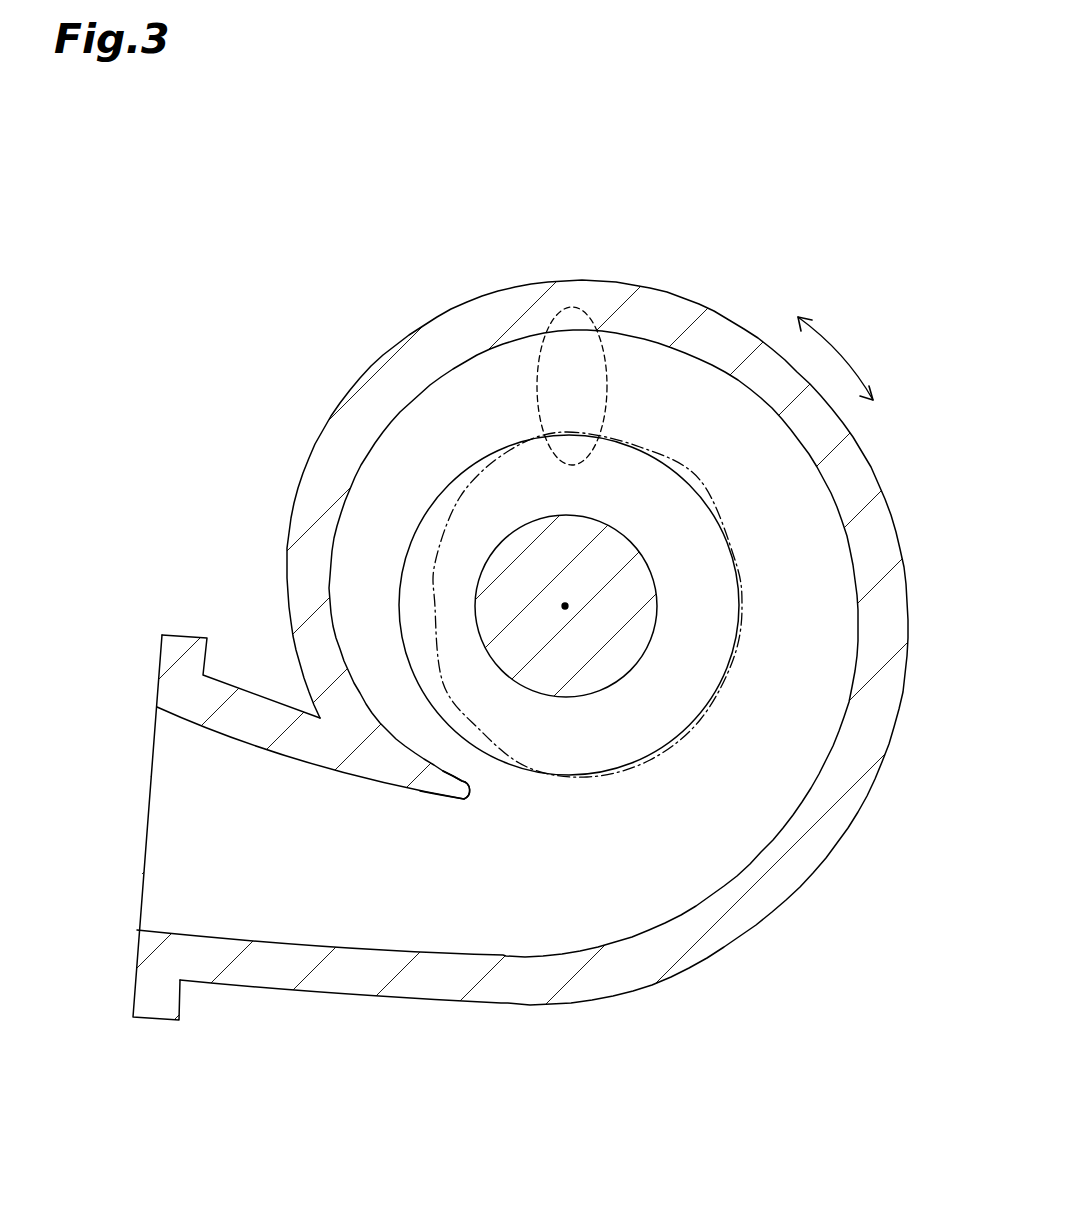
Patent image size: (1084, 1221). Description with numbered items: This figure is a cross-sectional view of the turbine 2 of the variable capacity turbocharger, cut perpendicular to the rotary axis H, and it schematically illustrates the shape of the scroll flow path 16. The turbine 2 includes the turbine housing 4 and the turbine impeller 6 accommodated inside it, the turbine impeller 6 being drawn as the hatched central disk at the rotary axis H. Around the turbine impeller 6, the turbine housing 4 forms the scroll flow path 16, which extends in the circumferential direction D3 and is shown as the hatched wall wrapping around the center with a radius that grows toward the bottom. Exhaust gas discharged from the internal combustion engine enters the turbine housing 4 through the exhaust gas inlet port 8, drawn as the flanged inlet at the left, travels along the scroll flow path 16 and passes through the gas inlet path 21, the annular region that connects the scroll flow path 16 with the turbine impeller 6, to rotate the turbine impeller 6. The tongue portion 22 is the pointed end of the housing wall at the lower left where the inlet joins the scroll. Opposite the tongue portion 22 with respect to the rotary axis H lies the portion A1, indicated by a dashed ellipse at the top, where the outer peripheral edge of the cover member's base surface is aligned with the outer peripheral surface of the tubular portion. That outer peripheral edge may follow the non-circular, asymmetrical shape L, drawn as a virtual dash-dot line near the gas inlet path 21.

The turbine 2 is at (542, 610).
The turbine housing 4 is at (487, 317).
The turbine impeller 6 is at (627, 597).
The exhaust gas inlet port 8 is at (147, 822).
The scroll flow path 16 is at (800, 685).
The gas inlet path 21 is at (660, 700).
The tongue portion 22 is at (480, 795).
The portion A1 is at (583, 307).
The circumferential direction D3 is at (842, 358).
The rotary axis H is at (565, 603).
The non-circular shape L is at (700, 500).